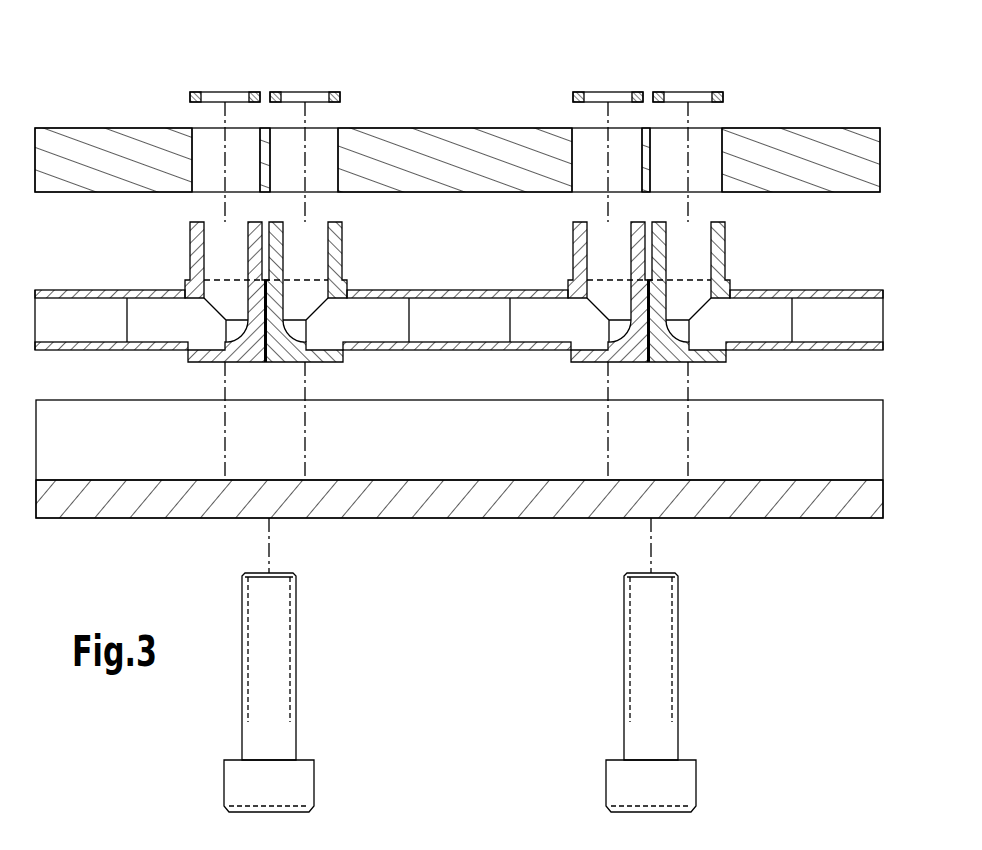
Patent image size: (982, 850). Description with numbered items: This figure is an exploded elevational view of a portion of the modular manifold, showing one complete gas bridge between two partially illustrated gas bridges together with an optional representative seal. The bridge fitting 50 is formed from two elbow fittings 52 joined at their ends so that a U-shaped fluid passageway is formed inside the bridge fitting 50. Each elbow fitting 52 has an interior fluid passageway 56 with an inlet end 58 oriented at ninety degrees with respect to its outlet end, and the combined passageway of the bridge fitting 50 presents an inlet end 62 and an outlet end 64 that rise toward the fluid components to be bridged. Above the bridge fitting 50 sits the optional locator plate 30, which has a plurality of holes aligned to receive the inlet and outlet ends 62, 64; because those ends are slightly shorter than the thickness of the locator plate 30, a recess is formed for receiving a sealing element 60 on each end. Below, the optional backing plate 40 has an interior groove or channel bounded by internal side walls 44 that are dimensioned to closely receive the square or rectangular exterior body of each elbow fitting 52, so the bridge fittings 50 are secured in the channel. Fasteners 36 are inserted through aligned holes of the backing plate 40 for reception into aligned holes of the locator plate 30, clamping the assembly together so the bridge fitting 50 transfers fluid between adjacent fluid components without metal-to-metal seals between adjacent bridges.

The locator plate 30 is at (866, 163).
The sealing element 60 is at (241, 82).
The outlet end 64 is at (213, 222).
The inlet end 62 is at (312, 222).
The elbow fitting 52 is at (181, 280).
The bridge fitting 50 is at (469, 266).
The interior fluid passageway 56 is at (145, 302).
The inlet end 58 is at (127, 352).
The backing plate 40 is at (883, 438).
The internal side wall 44 is at (57, 442).
The fastener 36 is at (275, 732).